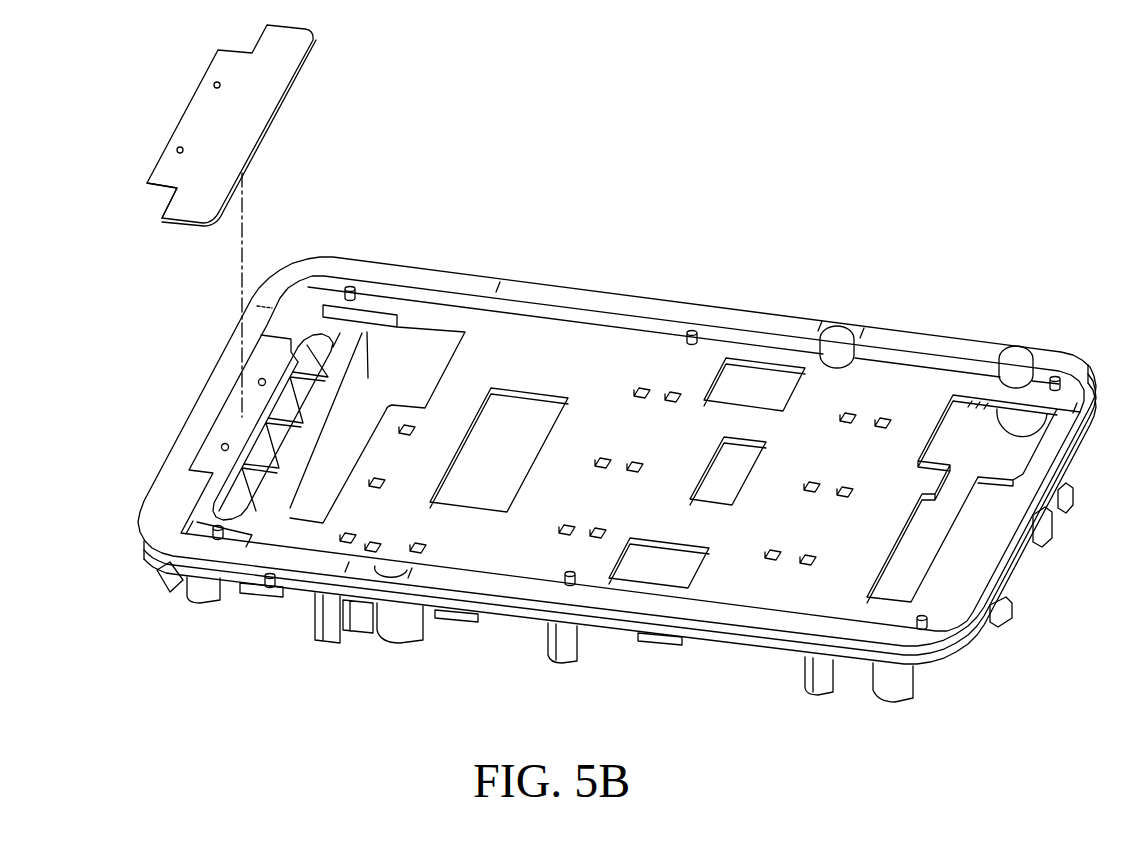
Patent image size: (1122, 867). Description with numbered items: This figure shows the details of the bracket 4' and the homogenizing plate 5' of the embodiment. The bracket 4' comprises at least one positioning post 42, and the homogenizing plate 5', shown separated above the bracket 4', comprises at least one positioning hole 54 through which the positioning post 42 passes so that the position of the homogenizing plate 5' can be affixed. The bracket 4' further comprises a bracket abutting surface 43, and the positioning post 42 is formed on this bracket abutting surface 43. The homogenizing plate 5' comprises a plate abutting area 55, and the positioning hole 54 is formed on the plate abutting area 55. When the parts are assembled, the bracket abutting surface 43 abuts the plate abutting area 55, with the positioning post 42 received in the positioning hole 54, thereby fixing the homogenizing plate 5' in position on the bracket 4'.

The bracket 4' is at (582, 479).
The homogenizing plate 5' is at (252, 125).
The positioning post 42 is at (258, 383).
The bracket abutting surface 43 is at (236, 430).
The positioning hole 54 is at (176, 150).
The plate abutting area 55 is at (170, 173).